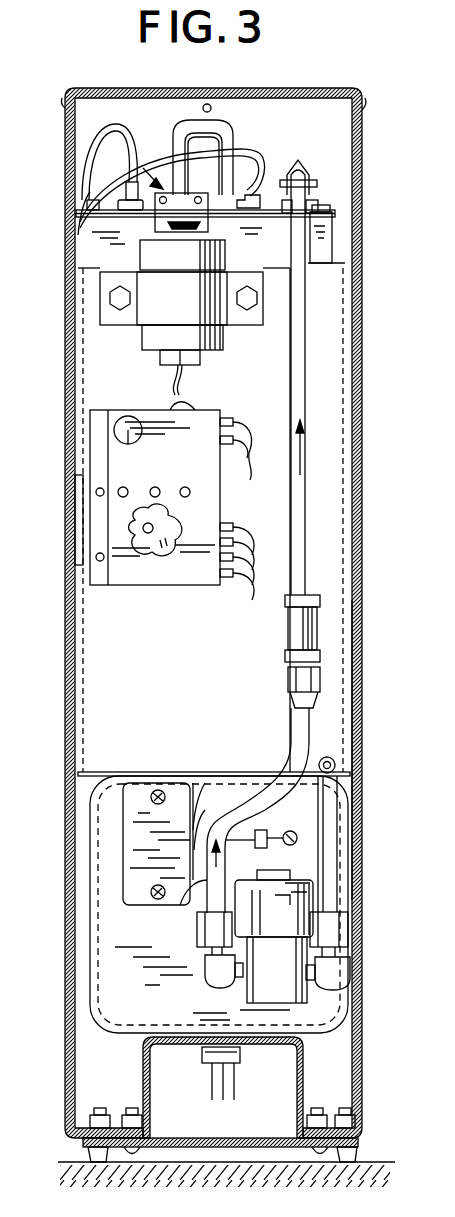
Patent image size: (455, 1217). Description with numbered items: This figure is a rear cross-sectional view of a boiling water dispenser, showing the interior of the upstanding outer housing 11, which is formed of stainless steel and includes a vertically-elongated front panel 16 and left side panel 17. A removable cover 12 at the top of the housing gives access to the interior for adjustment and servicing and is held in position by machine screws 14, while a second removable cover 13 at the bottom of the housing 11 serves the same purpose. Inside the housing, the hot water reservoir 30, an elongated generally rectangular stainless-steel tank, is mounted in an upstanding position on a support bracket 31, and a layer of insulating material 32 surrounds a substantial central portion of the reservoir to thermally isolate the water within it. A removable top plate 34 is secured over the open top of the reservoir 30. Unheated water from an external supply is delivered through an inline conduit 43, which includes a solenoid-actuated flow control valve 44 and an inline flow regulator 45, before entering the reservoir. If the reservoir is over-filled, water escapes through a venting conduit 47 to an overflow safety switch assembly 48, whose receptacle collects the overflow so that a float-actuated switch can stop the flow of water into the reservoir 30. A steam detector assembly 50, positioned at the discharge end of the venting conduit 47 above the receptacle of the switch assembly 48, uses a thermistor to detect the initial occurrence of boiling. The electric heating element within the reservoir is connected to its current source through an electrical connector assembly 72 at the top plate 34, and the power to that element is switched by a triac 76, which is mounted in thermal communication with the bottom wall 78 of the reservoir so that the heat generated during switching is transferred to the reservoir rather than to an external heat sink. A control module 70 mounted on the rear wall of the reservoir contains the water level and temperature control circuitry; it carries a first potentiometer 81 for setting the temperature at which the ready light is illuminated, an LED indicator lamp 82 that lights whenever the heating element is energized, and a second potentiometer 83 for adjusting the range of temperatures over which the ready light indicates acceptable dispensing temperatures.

The outer housing 11 is at (234, 584).
The removable cover 12 is at (300, 88).
The removable cover 13 is at (277, 1147).
The machine screws 14 is at (363, 103).
The front panel 16 is at (363, 742).
The left side panel 17 is at (77, 553).
The hot water reservoir 30 is at (333, 245).
The support bracket 31 is at (303, 1080).
The insulating material 32 is at (78, 745).
The top plate 34 is at (270, 213).
The inline conduit 43 is at (300, 340).
The solenoid-actuated flow control valve 44 is at (217, 895).
The inline flow regulator 45 is at (320, 625).
The venting conduit 47 is at (170, 133).
The overflow safety switch assembly 48 is at (130, 337).
The steam detector assembly 50 is at (78, 157).
The control module 70 is at (172, 532).
The electrical connector assembly 72 is at (207, 135).
The triac 76 is at (242, 1058).
The bottom wall 78 is at (226, 1189).
The first potentiometer 81 is at (158, 488).
The LED indicator lamp 82 is at (160, 528).
The second potentiometer 83 is at (130, 446).